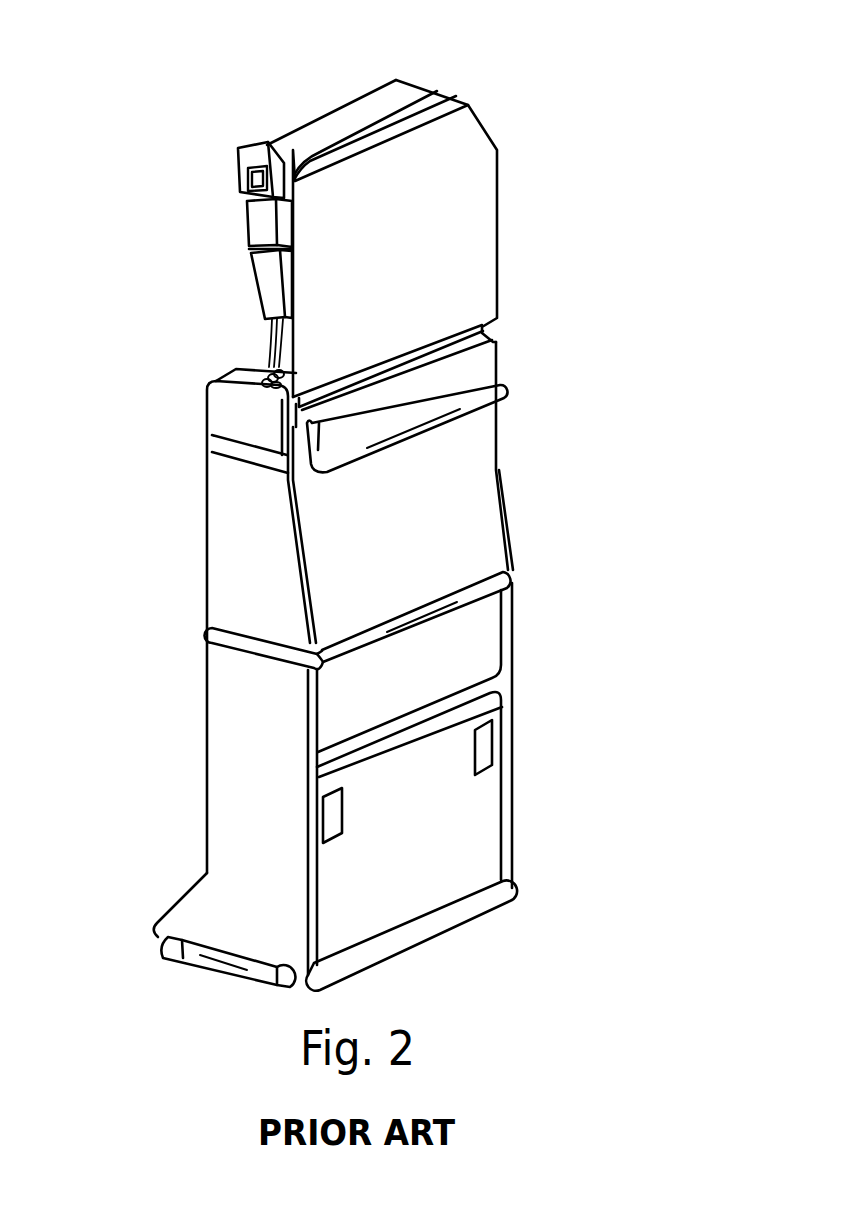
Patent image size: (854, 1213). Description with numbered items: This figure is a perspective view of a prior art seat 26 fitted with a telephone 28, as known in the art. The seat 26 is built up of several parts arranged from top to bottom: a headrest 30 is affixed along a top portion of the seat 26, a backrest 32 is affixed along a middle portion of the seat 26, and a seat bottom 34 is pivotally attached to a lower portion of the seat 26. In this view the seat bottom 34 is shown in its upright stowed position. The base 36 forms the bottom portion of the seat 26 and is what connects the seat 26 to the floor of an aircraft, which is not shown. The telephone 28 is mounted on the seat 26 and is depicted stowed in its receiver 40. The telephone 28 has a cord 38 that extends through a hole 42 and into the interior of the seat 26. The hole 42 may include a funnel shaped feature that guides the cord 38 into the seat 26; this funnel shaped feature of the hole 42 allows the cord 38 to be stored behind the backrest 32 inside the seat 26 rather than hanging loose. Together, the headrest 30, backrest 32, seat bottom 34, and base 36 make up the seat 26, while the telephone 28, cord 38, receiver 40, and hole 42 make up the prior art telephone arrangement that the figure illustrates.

The seat 26 is at (592, 429).
The telephone 28 is at (247, 220).
The headrest 30 is at (500, 220).
The backrest 32 is at (289, 492).
The seat bottom 34 is at (458, 553).
The base 36 is at (158, 830).
The cord 38 is at (267, 333).
The receiver 40 is at (281, 203).
The hole 42 is at (256, 369).